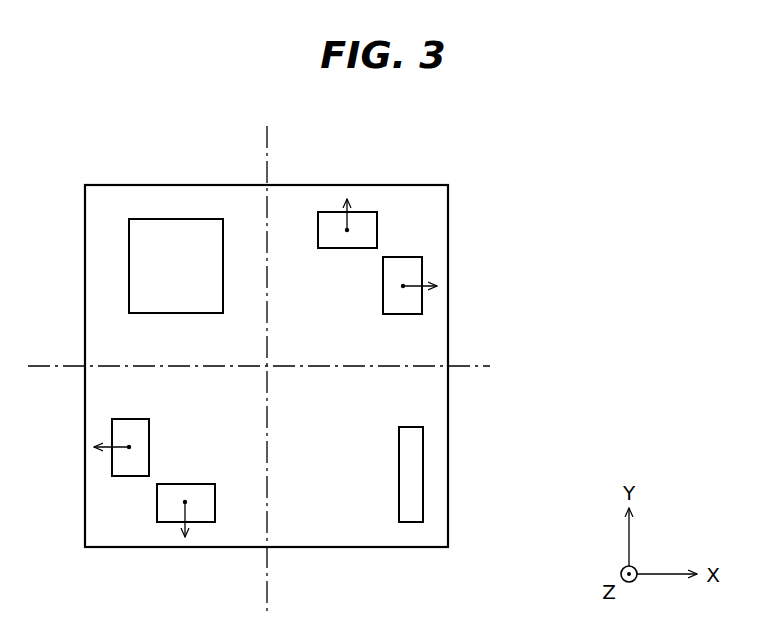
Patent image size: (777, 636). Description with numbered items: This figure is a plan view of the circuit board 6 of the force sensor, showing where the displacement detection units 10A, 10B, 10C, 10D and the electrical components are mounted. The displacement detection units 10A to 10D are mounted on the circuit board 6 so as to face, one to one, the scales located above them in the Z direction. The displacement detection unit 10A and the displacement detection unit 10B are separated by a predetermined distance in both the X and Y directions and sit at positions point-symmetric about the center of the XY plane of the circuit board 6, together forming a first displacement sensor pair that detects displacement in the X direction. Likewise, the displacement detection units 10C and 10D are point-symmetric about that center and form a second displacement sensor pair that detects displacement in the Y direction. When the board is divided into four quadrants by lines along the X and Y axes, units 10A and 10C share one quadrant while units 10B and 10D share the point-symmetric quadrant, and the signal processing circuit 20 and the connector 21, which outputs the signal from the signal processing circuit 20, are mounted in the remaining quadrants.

The circuit board 6 is at (407, 185).
The signal processing circuit 20 is at (152, 219).
The connector 21 is at (423, 460).
The displacement detection unit 10A is at (422, 303).
The displacement detection unit 10B is at (112, 421).
The displacement detection unit 10C is at (323, 212).
The displacement detection unit 10D is at (163, 522).